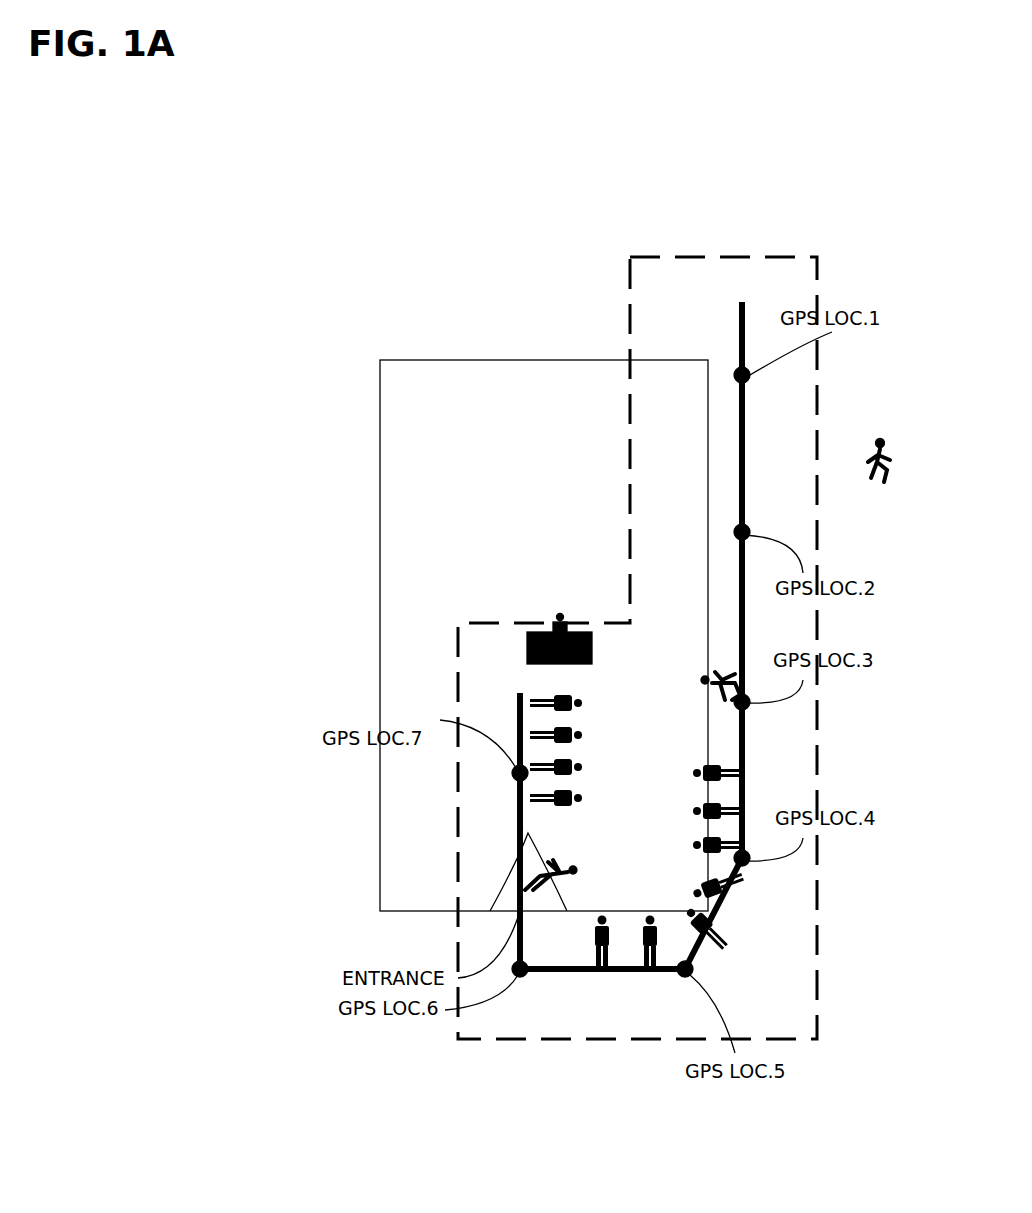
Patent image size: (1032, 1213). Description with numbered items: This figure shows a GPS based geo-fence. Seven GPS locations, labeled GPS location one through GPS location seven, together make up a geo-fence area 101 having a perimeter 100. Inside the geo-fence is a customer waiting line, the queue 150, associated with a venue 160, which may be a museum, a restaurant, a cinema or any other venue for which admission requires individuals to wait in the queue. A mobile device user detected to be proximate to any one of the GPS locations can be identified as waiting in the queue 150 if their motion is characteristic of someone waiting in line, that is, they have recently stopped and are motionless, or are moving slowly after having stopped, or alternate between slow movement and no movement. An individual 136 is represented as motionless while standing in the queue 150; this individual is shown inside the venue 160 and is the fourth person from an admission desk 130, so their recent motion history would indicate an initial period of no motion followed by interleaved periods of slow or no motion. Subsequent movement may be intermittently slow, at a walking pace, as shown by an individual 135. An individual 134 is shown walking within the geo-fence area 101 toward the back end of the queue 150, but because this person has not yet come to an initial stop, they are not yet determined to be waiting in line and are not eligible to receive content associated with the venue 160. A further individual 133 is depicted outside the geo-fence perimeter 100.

The perimeter 100 is at (632, 1040).
The geo-fence area 101 is at (726, 300).
The admission desk 130 is at (565, 617).
The person outside geo-fence 133 is at (893, 450).
The individual 134 is at (723, 668).
The individual 135 is at (578, 870).
The individual 136 is at (582, 805).
The queue 150 is at (727, 910).
The venue 160 is at (378, 476).